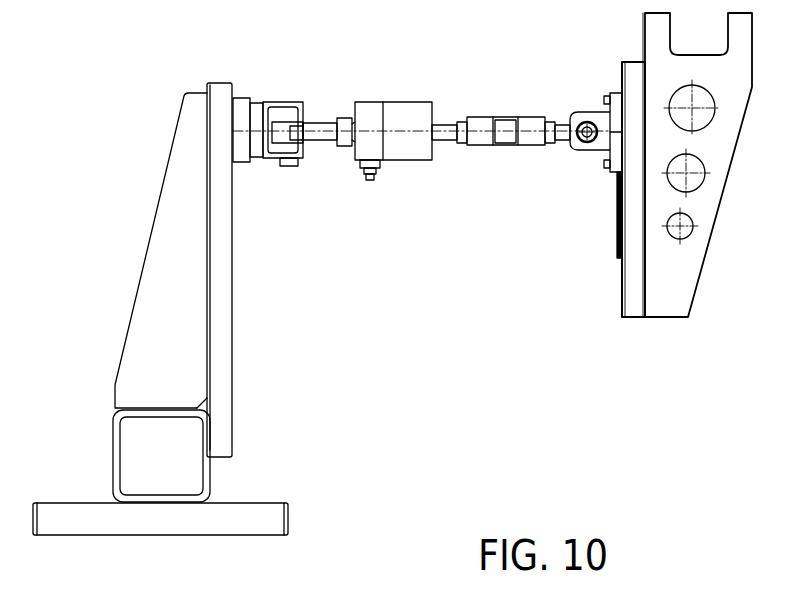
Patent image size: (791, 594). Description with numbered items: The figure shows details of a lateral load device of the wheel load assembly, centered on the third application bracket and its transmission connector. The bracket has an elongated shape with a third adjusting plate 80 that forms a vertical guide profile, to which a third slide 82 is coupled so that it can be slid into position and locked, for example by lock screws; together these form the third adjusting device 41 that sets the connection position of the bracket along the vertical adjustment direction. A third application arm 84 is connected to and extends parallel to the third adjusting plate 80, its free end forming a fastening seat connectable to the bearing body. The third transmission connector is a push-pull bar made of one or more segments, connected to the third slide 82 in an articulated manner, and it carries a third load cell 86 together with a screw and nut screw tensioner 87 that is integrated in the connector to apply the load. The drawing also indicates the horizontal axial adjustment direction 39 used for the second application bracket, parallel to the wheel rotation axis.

The second axial adjustment direction 39 is at (200, 137).
The third adjusting device 41 is at (593, 100).
The third adjusting plate 80 is at (632, 293).
The third slide 82 is at (598, 152).
The third application arm 84 is at (733, 62).
The third load cell 86 is at (373, 130).
The screw and nut screw tensioner 87 is at (507, 138).